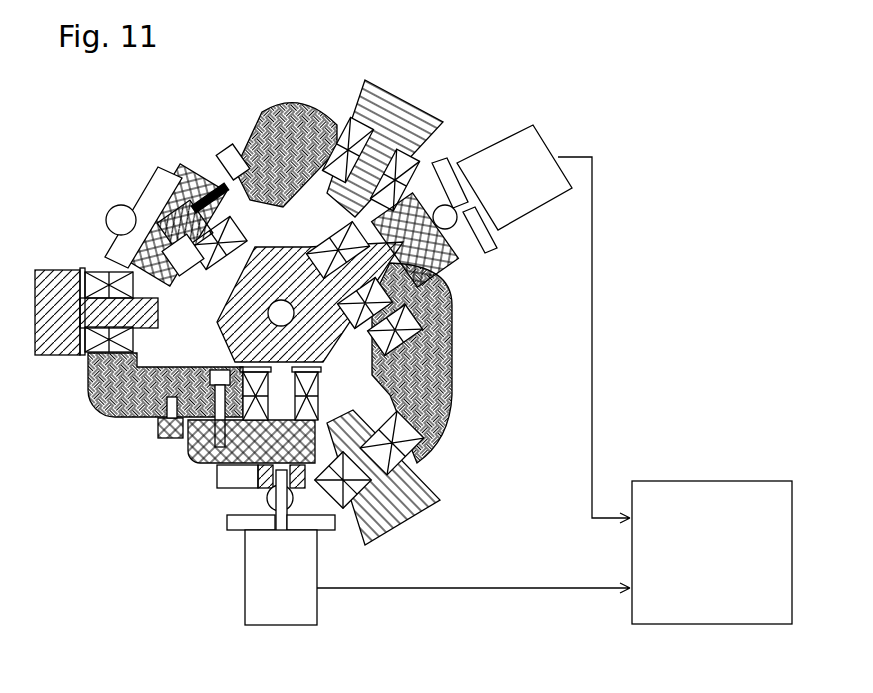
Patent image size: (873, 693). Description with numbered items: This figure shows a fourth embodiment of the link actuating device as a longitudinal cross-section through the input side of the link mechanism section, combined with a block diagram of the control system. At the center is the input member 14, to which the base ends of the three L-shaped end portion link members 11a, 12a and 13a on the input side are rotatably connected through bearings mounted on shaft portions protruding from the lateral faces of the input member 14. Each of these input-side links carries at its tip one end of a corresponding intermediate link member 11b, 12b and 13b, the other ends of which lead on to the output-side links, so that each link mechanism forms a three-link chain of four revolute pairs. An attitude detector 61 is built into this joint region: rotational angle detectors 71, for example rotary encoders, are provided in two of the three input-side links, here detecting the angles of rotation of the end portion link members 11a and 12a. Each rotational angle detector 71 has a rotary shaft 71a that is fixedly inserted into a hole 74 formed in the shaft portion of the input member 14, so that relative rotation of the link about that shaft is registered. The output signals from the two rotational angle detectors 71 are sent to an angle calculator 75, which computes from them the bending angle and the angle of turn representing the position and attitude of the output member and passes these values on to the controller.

The end portion link member on the input side 11a is at (105, 410).
The intermediate link member 11b is at (53, 268).
The end portion link member on the input side 12a is at (455, 410).
The intermediate link member 12b is at (405, 520).
The end portion link member on the input side 13a is at (290, 105).
The intermediate link member 13b is at (395, 96).
The input member 14 is at (283, 248).
The attitude detector 61 is at (606, 264).
The rotational angle detector 71 is at (518, 140).
The rotary shaft 71a is at (282, 500).
The hole 74 is at (266, 497).
The angle calculator 75 is at (735, 481).